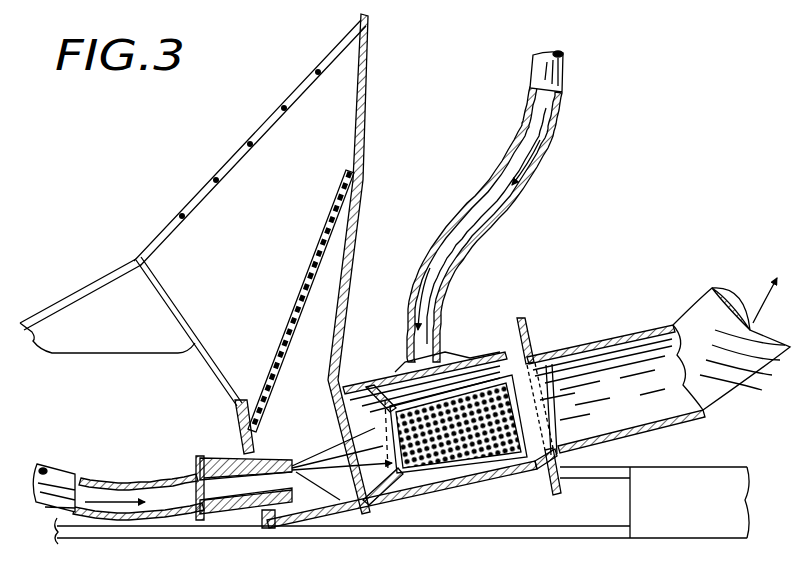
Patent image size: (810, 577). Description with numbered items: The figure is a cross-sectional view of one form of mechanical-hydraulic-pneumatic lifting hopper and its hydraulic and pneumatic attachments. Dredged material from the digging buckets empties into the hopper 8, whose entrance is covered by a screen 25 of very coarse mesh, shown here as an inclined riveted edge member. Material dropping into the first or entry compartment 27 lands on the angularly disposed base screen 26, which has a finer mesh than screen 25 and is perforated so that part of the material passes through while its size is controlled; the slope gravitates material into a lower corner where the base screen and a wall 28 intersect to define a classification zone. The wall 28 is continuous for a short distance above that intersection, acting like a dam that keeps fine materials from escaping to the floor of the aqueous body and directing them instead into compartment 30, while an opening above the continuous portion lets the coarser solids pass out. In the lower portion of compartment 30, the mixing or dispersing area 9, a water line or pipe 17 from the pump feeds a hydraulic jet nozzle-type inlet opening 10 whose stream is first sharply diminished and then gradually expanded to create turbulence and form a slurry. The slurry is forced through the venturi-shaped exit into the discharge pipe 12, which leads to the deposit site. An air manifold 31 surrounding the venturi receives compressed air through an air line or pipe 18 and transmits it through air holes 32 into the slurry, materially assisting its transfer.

The hopper 8 is at (366, 118).
The mixing or dispersing area 9 is at (342, 464).
The hydraulic jet nozzle-type inlet opening 10 is at (226, 462).
The discharge pipe 12 is at (583, 348).
The water line or pipe 17 is at (60, 470).
The air line or pipe 18 is at (548, 152).
The screen 25 is at (183, 216).
The base screen 26 is at (300, 316).
The first or entry compartment 27 is at (282, 219).
The wall 28 is at (240, 395).
The compartment 30 is at (411, 423).
The air manifold 31 is at (462, 356).
The air holes 32 is at (506, 466).